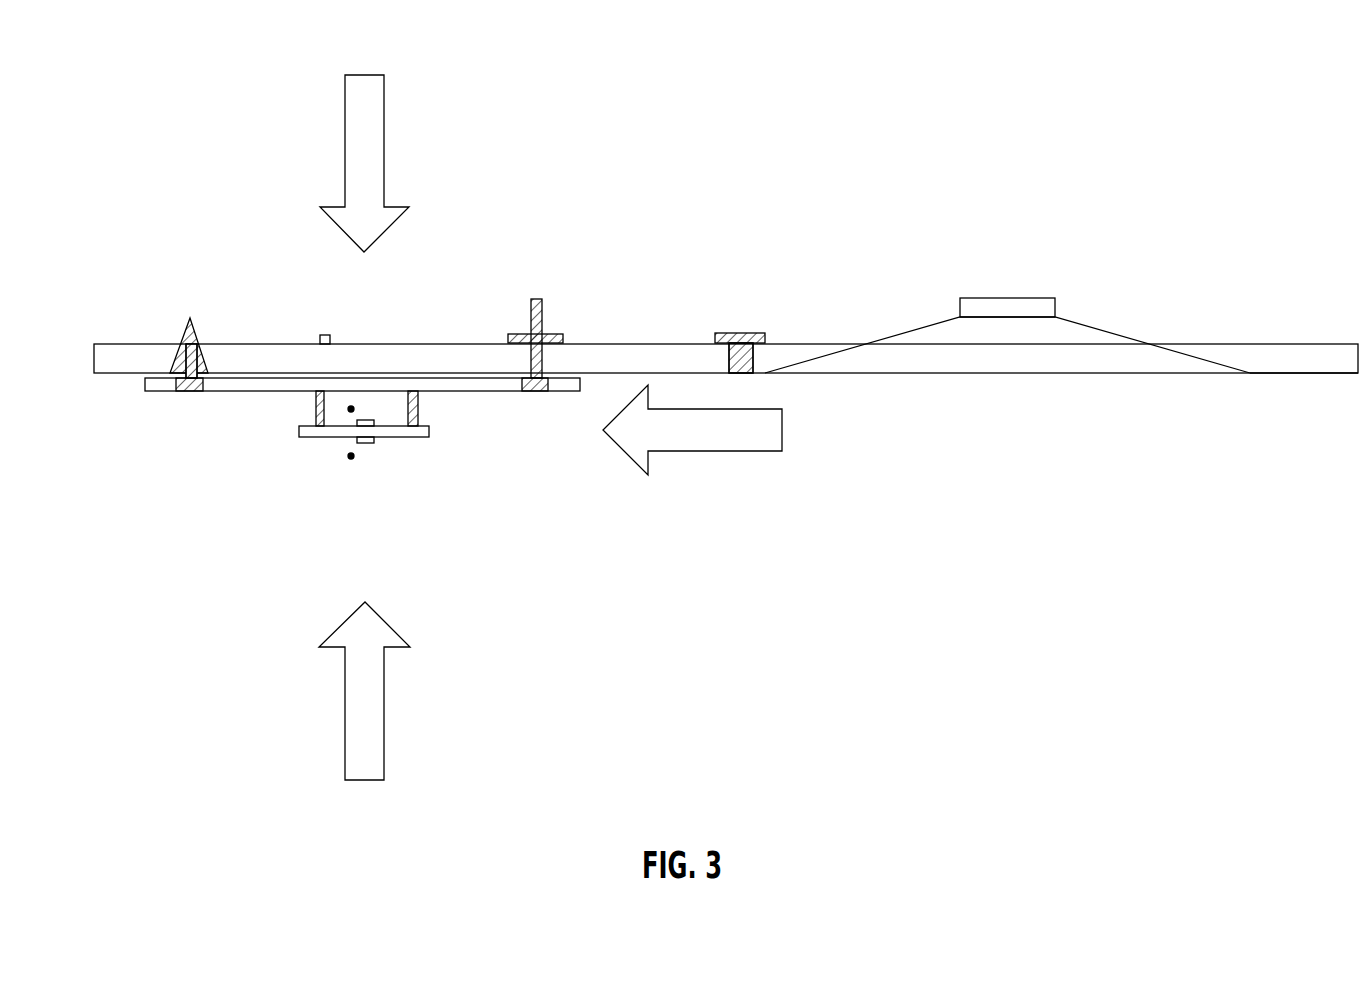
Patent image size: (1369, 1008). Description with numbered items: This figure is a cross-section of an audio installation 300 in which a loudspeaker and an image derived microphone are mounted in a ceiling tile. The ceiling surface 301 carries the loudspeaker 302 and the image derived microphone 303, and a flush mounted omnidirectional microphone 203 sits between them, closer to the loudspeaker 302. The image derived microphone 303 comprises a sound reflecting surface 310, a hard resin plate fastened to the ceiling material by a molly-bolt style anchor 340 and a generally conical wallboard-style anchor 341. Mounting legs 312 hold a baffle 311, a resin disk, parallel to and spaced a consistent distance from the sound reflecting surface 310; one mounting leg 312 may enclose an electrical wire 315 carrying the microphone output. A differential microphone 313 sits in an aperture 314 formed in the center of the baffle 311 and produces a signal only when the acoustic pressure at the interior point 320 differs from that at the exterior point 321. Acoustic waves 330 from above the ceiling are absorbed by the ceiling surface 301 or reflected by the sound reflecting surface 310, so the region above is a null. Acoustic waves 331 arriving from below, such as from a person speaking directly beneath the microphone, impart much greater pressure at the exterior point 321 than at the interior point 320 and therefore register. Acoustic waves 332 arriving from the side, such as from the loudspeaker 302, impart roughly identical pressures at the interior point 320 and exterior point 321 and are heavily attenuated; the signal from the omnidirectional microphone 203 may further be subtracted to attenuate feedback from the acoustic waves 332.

The audio installation 300 is at (124, 72).
The ceiling surface 301 is at (1272, 344).
The loudspeaker 302 is at (1017, 375).
The image derived microphone 303 is at (433, 330).
The sound reflecting surface 310 is at (189, 405).
The baffle 311 is at (393, 437).
The mounting legs 312 is at (316, 398).
The differential microphone 313 is at (367, 456).
The aperture 314 is at (388, 433).
The electrical wire 315 is at (323, 335).
The interior point 320 is at (351, 409).
The exterior point 321 is at (351, 456).
The acoustic waves 330 is at (345, 142).
The upward force 331 is at (345, 693).
The acoustic waves 332 is at (703, 451).
The molly-bolt style anchor 340 is at (539, 405).
The conical wallboard-style anchor 341 is at (182, 340).
The omnidirectional microphone 203 is at (753, 361).